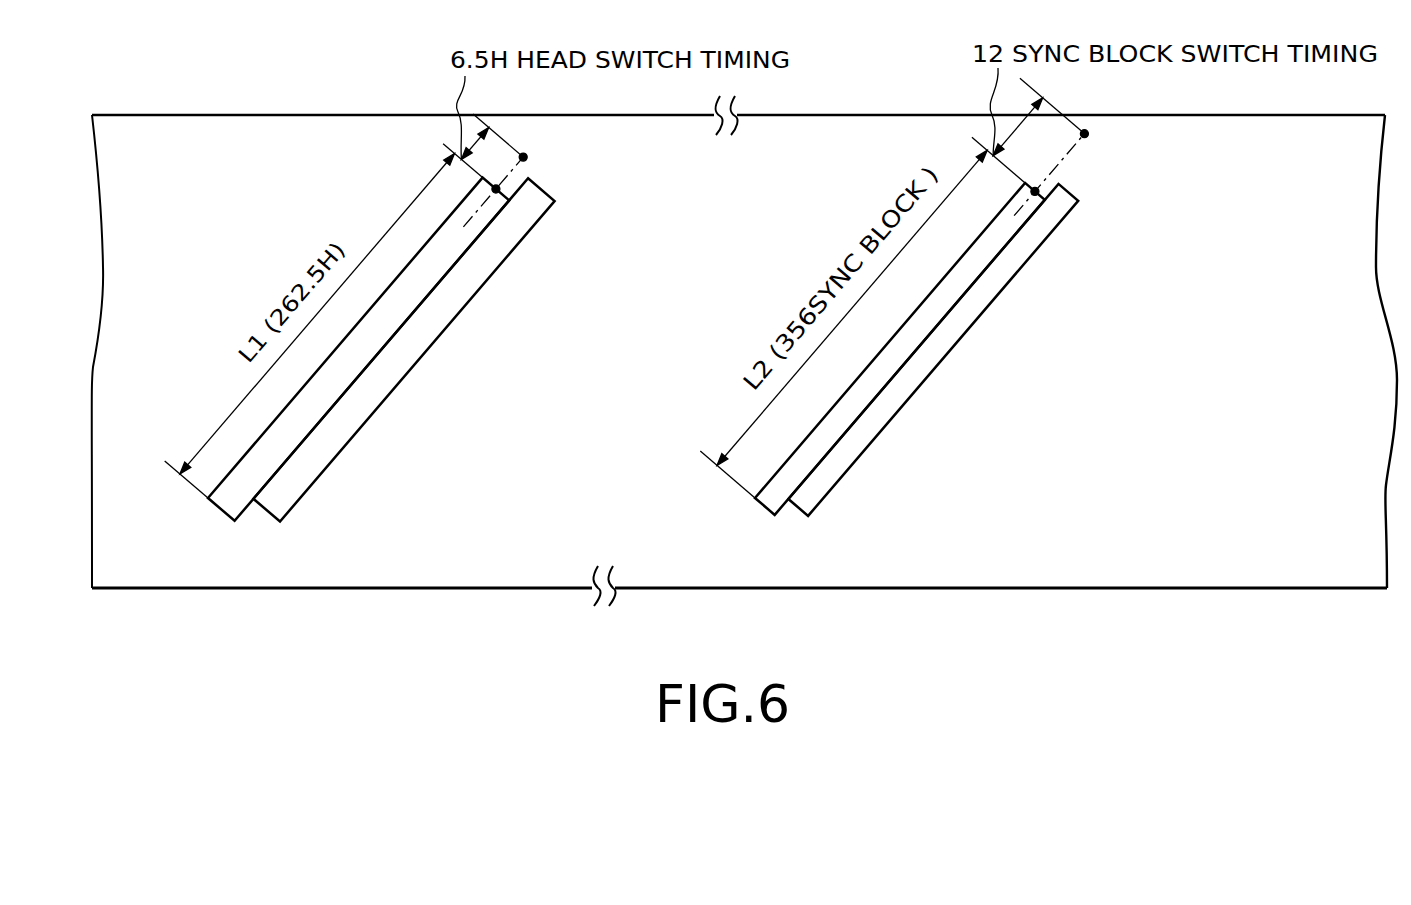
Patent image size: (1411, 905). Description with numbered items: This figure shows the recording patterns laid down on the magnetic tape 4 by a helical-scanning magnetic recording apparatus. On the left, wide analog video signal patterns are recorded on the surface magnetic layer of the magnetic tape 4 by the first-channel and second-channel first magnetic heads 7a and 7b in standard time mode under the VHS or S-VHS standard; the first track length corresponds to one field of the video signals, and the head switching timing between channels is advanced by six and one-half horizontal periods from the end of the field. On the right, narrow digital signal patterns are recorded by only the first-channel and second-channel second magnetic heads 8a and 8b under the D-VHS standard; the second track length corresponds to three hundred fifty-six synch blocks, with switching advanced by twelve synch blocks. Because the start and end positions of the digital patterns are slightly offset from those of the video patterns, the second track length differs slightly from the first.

The magnetic tape 4 is at (283, 115).
The 1ch first magnetic head 7a is at (317, 470).
The 2ch first magnetic head 7b is at (222, 503).
The 1ch second magnetic head 8a is at (852, 442).
The 2ch second magnetic head 8b is at (767, 503).